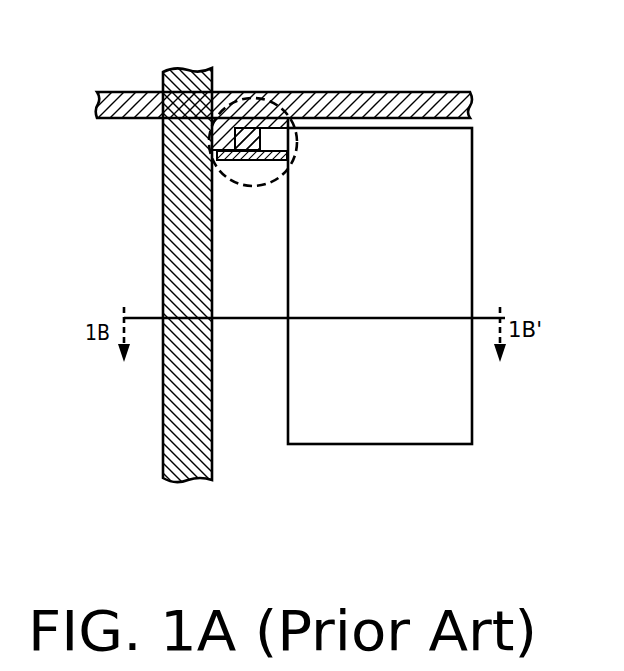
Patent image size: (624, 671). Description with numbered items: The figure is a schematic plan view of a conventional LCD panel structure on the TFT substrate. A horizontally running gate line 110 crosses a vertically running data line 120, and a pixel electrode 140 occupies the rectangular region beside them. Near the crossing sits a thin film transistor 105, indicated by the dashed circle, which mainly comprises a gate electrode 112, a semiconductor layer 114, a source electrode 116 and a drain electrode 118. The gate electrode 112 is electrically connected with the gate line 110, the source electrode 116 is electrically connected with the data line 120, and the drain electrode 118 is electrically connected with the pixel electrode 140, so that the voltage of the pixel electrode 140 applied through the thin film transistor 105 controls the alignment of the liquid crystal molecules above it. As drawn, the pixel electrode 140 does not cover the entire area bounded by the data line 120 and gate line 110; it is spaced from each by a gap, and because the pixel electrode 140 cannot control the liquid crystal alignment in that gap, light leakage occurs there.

The thin film transistor 105 is at (253, 188).
The gate line 110 is at (397, 91).
The gate electrode 112 is at (289, 157).
The semiconductor layer 114 is at (251, 132).
The source electrode 116 is at (236, 124).
The drain electrode 118 is at (291, 126).
The data line 120 is at (167, 155).
The pixel electrode 140 is at (455, 235).